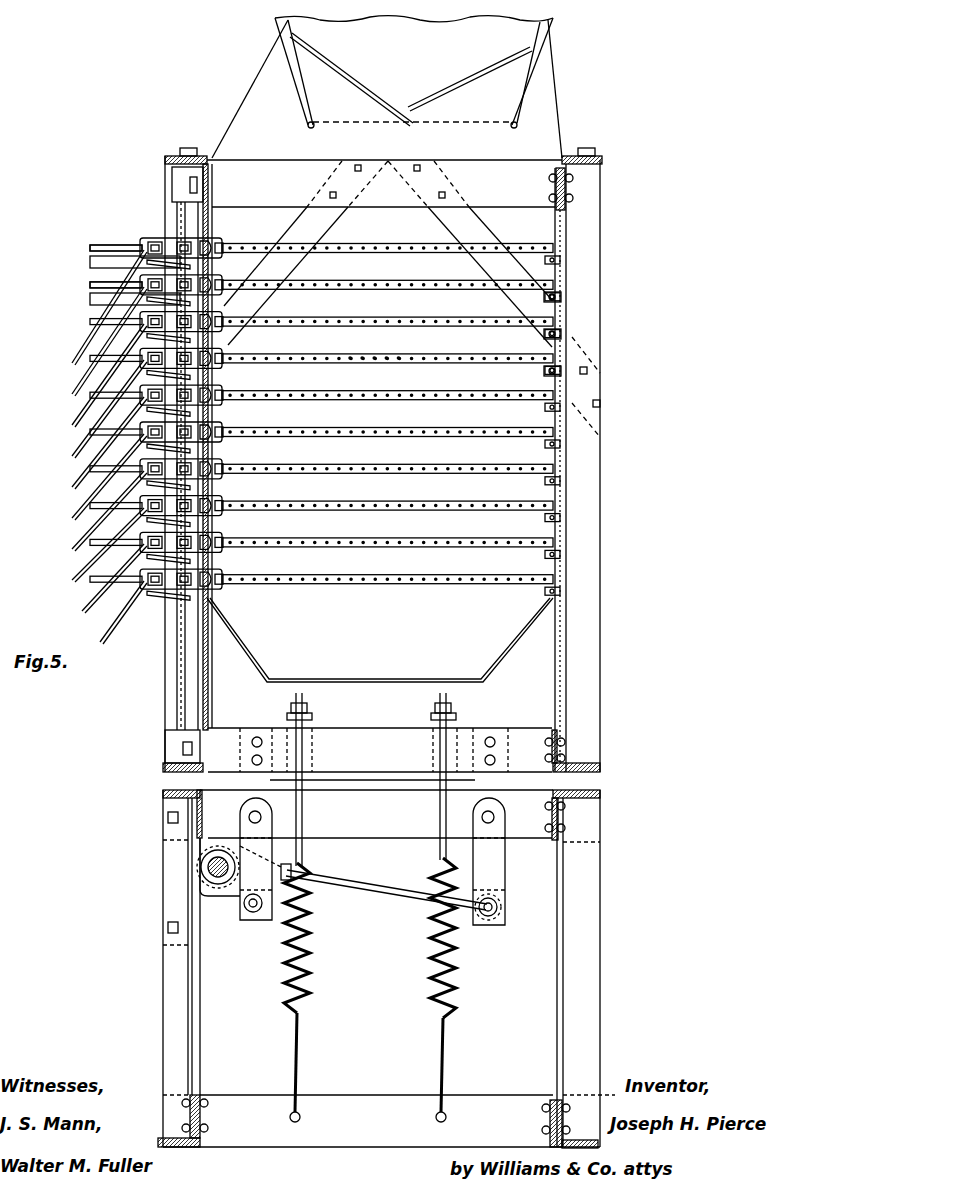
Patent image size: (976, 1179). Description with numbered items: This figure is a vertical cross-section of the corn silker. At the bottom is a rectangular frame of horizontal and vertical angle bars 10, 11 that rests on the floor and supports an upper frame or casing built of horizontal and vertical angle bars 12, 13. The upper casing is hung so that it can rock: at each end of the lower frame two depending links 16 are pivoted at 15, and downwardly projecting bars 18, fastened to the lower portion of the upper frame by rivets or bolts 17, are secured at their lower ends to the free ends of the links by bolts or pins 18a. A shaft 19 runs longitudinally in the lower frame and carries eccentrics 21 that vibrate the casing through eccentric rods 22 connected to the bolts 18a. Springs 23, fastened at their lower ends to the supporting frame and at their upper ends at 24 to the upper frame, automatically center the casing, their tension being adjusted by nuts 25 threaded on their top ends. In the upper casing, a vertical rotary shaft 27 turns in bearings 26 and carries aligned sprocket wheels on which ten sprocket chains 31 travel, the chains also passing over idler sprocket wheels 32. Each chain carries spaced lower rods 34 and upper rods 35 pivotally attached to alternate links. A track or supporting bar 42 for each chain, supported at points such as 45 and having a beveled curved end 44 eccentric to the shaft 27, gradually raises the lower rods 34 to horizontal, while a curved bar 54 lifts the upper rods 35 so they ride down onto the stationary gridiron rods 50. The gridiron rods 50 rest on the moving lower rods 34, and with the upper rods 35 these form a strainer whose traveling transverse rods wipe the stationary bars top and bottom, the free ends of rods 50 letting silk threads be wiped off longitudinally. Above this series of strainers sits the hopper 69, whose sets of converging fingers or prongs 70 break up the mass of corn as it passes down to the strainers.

The horizontal angle bars 10 is at (379, 969).
The vertical angle bars 11 is at (175, 997).
The horizontal angle bars 12 is at (383, 460).
The vertical angle bars 13 is at (585, 633).
The pivot 15 is at (249, 817).
The depending links 16 is at (497, 880).
The rivets or bolts 17 is at (252, 744).
The downwardly projecting bars 18 is at (252, 780).
The bolts or pins 18a is at (499, 910).
The shaft 19 is at (212, 862).
The eccentrics 21 is at (200, 875).
The eccentric rods 22 is at (360, 886).
The springs 23 is at (432, 950).
The spring upper attachment 24 is at (431, 716).
The nuts 25 is at (435, 707).
The bearings 26 is at (175, 185).
The vertical rotary shaft 27 is at (180, 695).
The sprocket chains 31 is at (225, 330).
The idler sprocket wheels 32 is at (215, 407).
The lower rods 34 is at (78, 545).
The upper rods 35 is at (78, 537).
The track or supporting bar 42 is at (560, 337).
The curved end 44 is at (92, 297).
The support point 45 is at (562, 303).
The longitudinal parallel rods 50 is at (410, 385).
The curved bar 54 is at (92, 246).
The hopper 69 is at (387, 87).
The converging fingers or prongs 70 is at (440, 98).